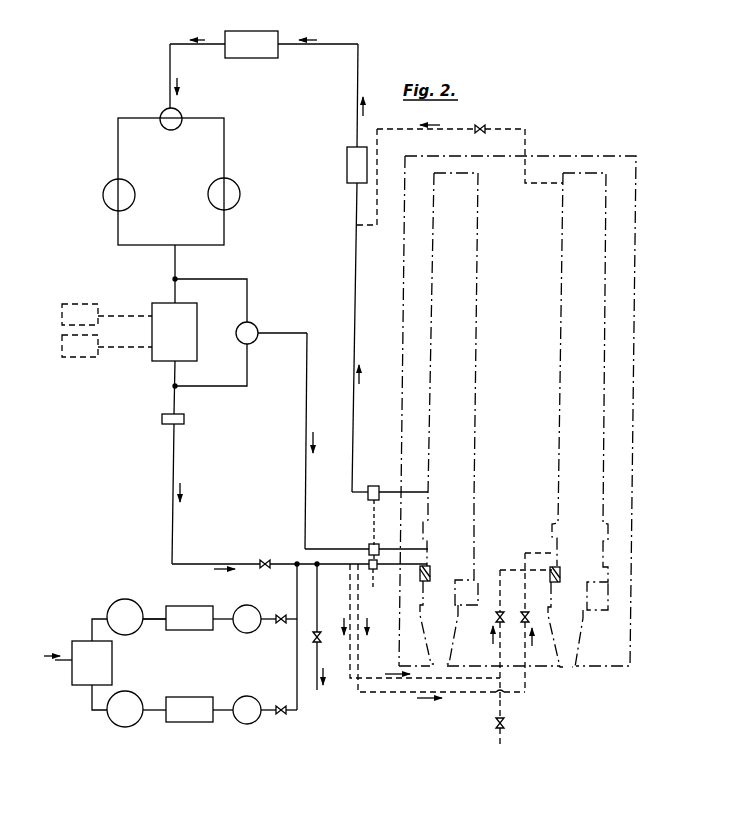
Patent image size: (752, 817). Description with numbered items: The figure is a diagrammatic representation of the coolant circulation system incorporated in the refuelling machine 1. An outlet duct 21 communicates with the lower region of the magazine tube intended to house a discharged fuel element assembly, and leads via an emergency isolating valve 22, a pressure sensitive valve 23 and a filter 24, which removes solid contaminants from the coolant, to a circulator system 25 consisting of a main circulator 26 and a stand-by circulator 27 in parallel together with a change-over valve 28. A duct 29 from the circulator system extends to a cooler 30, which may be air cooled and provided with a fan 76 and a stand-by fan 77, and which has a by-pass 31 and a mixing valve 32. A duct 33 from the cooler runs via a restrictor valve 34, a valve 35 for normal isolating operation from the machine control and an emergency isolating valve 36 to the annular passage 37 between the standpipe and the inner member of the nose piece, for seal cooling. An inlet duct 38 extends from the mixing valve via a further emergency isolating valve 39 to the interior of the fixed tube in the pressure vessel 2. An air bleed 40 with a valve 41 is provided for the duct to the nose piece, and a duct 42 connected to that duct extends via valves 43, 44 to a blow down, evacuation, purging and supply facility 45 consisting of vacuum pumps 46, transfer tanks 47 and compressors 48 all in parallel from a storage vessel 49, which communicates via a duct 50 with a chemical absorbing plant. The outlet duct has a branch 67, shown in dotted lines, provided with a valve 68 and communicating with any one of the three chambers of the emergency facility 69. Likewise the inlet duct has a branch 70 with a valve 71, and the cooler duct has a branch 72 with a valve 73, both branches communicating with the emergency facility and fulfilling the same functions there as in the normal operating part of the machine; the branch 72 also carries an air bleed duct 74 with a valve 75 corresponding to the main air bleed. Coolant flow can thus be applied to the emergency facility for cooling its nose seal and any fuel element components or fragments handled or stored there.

The refuelling machine 1 is at (598, 154).
The pressure vessel 2 is at (475, 331).
The duct 21 is at (387, 491).
The emergency isolating valve 22 is at (368, 497).
The pressure sensitive valve 23 is at (347, 163).
The filter 24 is at (251, 44).
The circulator system 25 is at (226, 152).
The main circulator 26 is at (228, 198).
The stand-by circulator 27 is at (122, 197).
The change-over valve 28 is at (181, 116).
The line 29 is at (177, 267).
The cooler 30 is at (184, 324).
The by-pass 31 is at (249, 292).
The mixing valve 32 is at (254, 326).
The duct 33 is at (174, 456).
The restrictor valve 34 is at (180, 416).
The valve 35 is at (264, 559).
The emergency isolating valve 36 is at (371, 581).
The annular passage 37 is at (434, 579).
The inlet duct 38 is at (305, 405).
The emergency isolating valve 39 is at (369, 548).
The air bleed 40 is at (318, 656).
The valve 41 is at (318, 631).
The duct 42 is at (296, 584).
The valve 43 is at (279, 632).
The valve 44 is at (281, 706).
The blow down, evacuation, purging and supply facility 45 is at (157, 614).
The vacuum pumps 46 is at (244, 705).
The transfer tanks 47 is at (186, 707).
The compressors 48 is at (123, 705).
The storage vessel 49 is at (101, 671).
The duct 50 is at (62, 665).
The branch 67 is at (378, 200).
The valve 68 is at (485, 128).
The emergency facility 69 is at (581, 229).
The branch 70 is at (352, 662).
The valve 71 is at (526, 616).
The branch 72 is at (466, 673).
The valve 73 is at (501, 616).
The air bleed duct 74 is at (498, 709).
The valve 75 is at (497, 723).
The fan 76 is at (78, 303).
The stand-by fan 77 is at (89, 358).